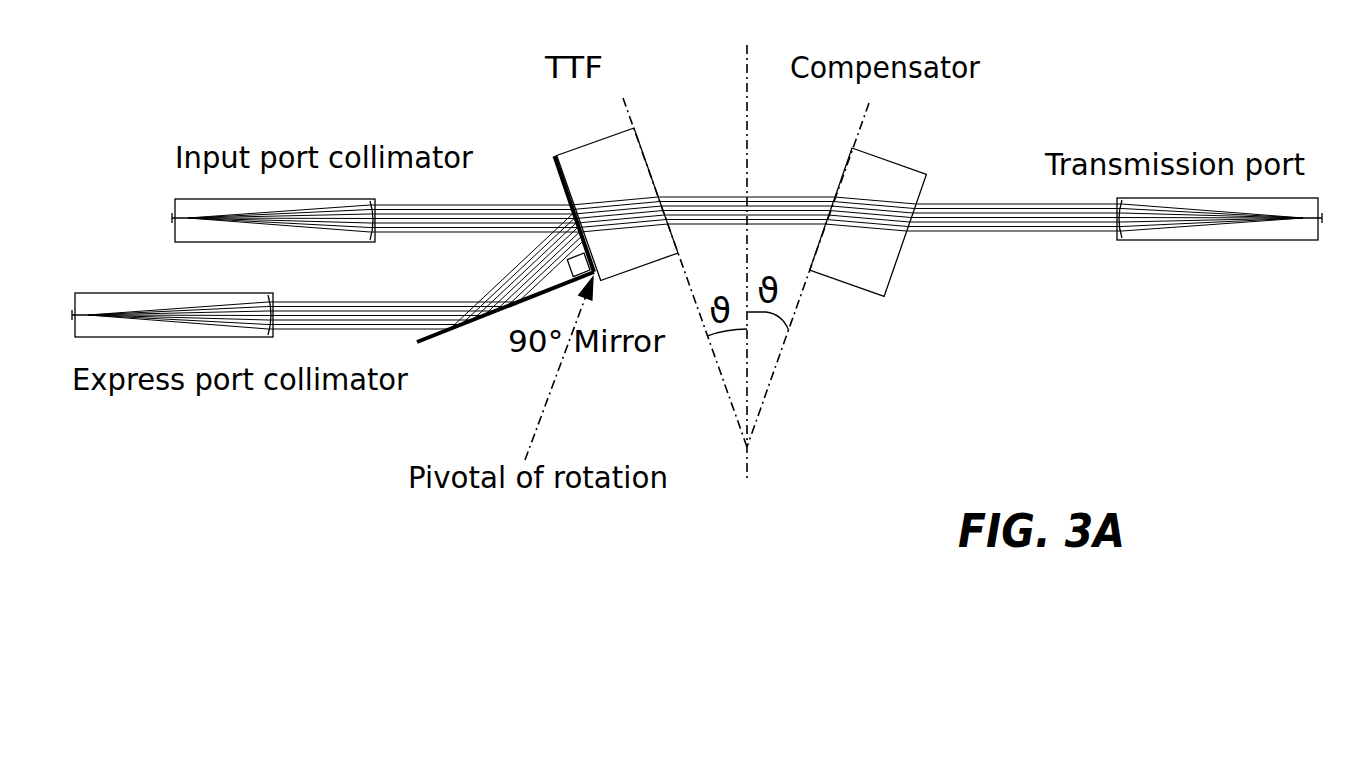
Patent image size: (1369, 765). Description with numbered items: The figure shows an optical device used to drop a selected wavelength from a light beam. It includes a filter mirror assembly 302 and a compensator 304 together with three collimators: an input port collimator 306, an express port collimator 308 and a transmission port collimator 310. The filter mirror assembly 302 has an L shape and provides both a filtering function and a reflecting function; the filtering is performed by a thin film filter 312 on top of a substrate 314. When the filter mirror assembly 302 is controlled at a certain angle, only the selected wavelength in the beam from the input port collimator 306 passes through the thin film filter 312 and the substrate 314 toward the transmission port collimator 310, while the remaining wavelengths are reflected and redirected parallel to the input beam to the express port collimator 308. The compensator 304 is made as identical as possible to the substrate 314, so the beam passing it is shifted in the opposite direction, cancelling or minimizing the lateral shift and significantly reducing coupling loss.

The filter mirror assembly 302 is at (636, 204).
The compensator 304 is at (878, 213).
The input port collimator 306 is at (273, 177).
The express port collimator 308 is at (172, 297).
The transmission port collimator 310 is at (1219, 244).
The thin film filter 312 is at (503, 253).
The substrate 314 is at (586, 192).